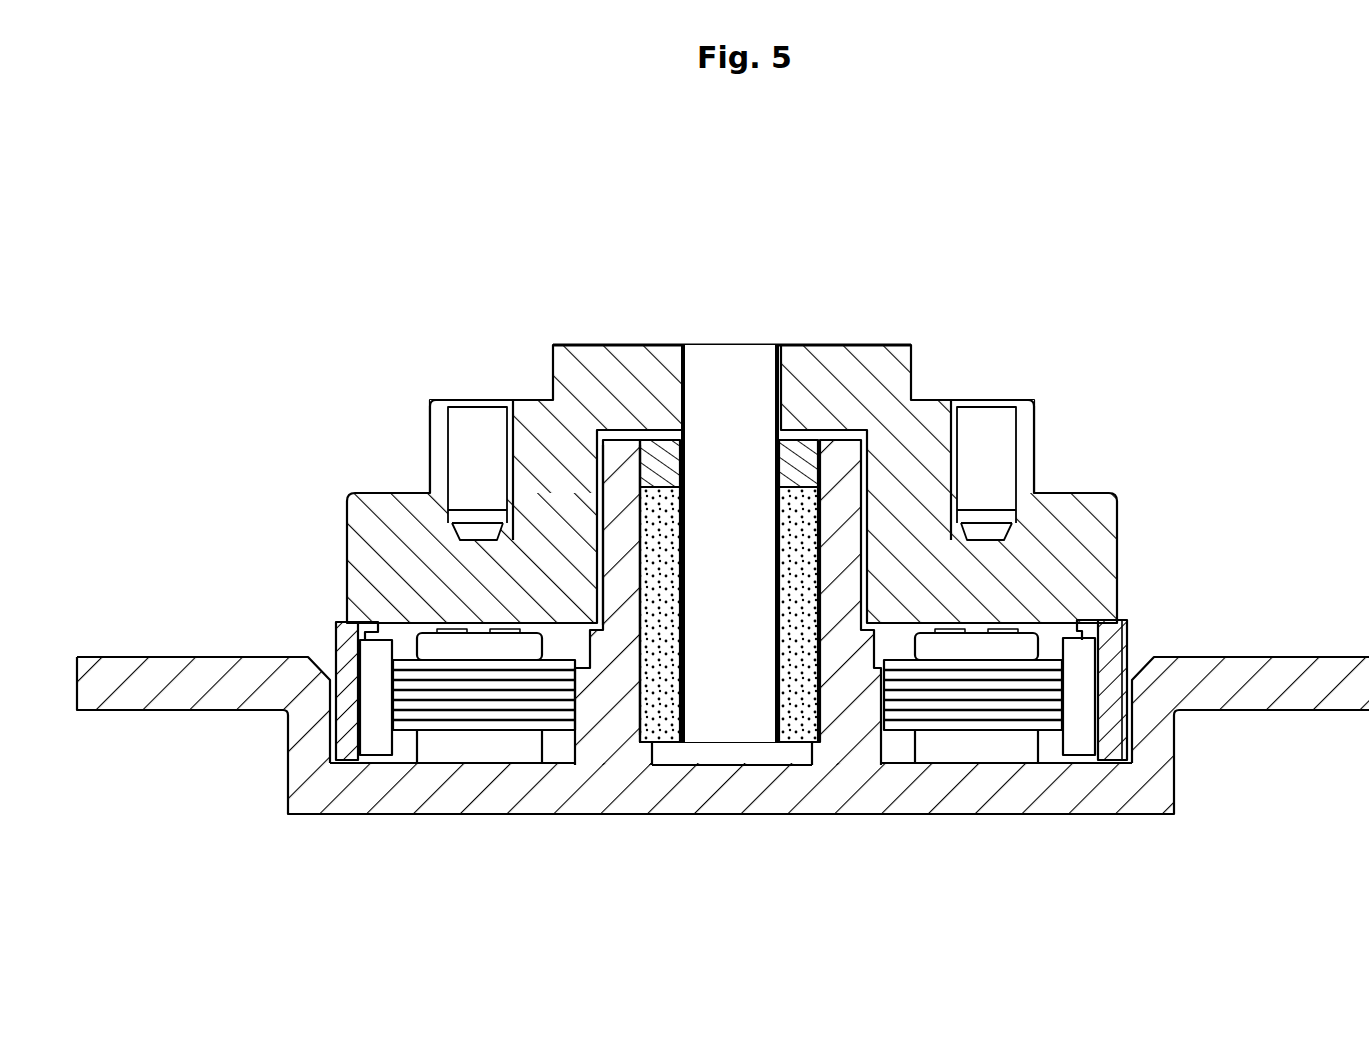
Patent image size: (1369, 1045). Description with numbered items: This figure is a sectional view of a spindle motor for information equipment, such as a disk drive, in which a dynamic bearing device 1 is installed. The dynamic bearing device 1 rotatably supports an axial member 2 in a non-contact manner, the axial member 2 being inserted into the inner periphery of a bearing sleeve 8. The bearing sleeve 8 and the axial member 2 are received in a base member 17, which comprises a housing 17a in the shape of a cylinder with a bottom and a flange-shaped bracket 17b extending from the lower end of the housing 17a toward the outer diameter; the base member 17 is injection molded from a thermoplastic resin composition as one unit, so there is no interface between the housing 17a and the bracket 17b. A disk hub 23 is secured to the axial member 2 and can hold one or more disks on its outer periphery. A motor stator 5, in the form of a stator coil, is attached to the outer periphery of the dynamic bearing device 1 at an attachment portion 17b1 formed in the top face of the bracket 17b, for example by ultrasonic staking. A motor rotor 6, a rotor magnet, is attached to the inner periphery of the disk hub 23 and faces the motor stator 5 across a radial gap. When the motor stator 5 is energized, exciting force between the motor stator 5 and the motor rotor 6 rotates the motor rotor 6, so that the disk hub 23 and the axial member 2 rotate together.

The dynamic bearing device 1 is at (723, 593).
The axial member 2 is at (783, 378).
The motor stator 5 is at (1008, 750).
The motor rotor 6 is at (1085, 660).
The bearing sleeve 8 is at (797, 530).
The base member 17 is at (568, 555).
The housing 17a is at (620, 568).
The bracket 17b is at (437, 805).
The attachment portion 17b1 is at (506, 750).
The disk hub 23 is at (585, 345).